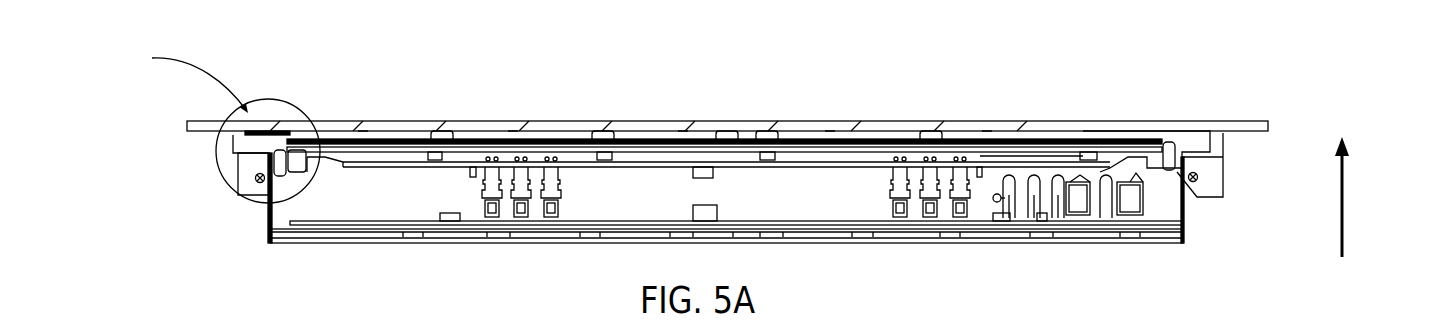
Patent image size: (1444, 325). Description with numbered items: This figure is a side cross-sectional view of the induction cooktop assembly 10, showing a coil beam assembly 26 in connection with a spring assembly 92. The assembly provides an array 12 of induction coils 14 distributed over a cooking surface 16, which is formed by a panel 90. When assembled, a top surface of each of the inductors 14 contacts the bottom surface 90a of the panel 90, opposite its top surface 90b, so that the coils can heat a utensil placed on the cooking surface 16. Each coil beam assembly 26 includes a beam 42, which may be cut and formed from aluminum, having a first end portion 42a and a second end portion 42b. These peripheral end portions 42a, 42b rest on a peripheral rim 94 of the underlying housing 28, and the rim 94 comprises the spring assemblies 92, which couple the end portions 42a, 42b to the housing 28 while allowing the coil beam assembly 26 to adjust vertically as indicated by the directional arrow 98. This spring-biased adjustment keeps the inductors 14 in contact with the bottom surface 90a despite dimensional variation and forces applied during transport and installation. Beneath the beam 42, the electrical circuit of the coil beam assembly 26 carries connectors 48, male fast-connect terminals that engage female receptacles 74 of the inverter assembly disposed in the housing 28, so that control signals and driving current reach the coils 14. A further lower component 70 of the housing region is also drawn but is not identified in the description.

The induction cooktop assembly 10 is at (265, 64).
The array 12 is at (1193, 128).
The induction coils 14 is at (683, 131).
The cooking surface 16 is at (1063, 121).
The coil beam assemblies 26 is at (1188, 174).
The housing 28 is at (268, 238).
The beams 42 is at (337, 157).
The first end portion 42a is at (307, 157).
The second end portion 42b is at (1153, 165).
The connectors 48 is at (547, 200).
The base plate 70 is at (1183, 239).
The female receptacles 74 is at (726, 187).
The panel 90 is at (724, 119).
The bottom surface 90a is at (728, 133).
The top surface 90b is at (1037, 121).
The spring assemblies 92 is at (268, 196).
The peripheral rim 94 is at (255, 179).
The directional arrow 98 is at (1344, 188).